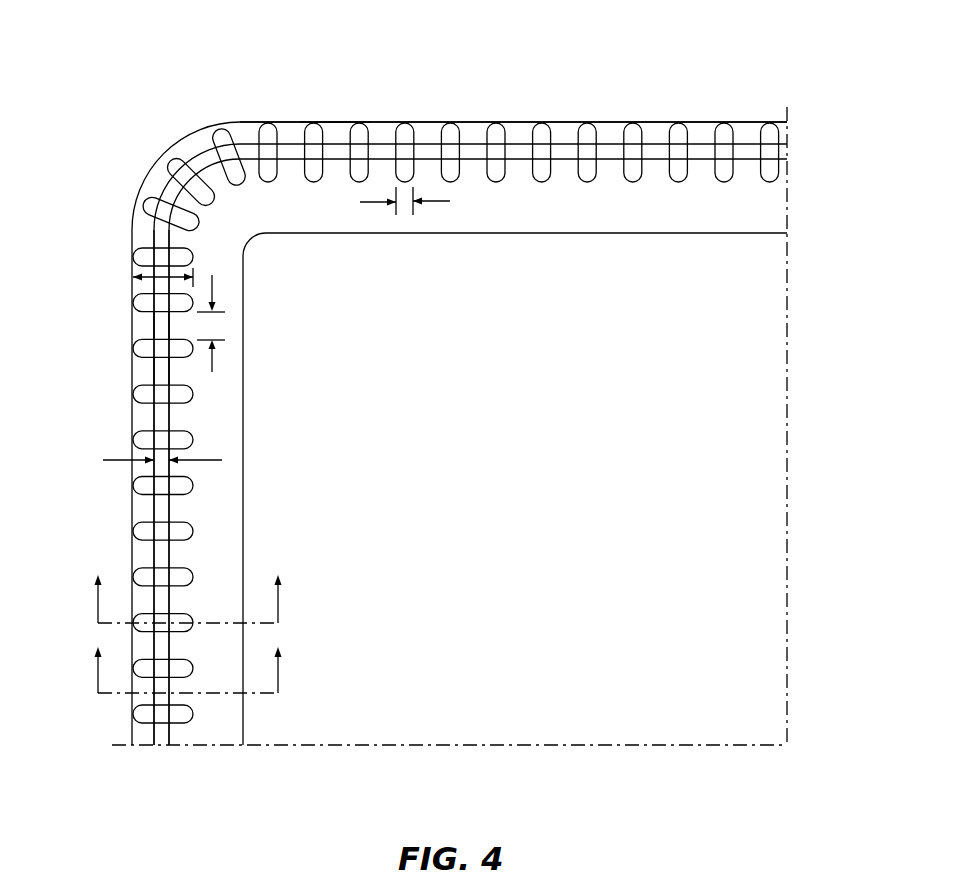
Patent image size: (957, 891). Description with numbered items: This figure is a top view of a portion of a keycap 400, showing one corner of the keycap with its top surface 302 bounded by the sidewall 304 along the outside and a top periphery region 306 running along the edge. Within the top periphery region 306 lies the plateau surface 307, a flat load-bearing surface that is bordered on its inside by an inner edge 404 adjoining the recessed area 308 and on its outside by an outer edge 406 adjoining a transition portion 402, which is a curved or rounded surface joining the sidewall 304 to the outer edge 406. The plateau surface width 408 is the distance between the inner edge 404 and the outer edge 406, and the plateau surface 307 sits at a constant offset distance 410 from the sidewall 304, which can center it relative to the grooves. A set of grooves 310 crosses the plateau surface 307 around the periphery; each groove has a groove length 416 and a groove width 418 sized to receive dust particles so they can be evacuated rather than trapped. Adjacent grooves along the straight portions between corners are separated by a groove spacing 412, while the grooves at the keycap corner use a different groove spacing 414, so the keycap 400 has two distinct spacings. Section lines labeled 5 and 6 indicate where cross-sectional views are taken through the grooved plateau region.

The keycap 400 is at (150, 118).
The sidewall 304 is at (520, 121).
The transition portion 402 is at (659, 130).
The plateau surface 307 is at (163, 417).
The recessed area 308 is at (755, 210).
The top surface 302 is at (722, 445).
The top periphery region 306 is at (609, 119).
The offset distance 410 is at (337, 112).
The groove spacing 414 is at (224, 187).
The set of grooves 310 is at (183, 487).
The groove length 416 is at (163, 275).
The groove width 418 is at (440, 203).
The groove spacing 412 is at (212, 280).
The inner edge 404 is at (168, 326).
The outer edge 406 is at (155, 373).
The plateau surface width 408 is at (200, 456).
The section line 5- 5 is at (187, 596).
The section line 6- 6 is at (187, 667).